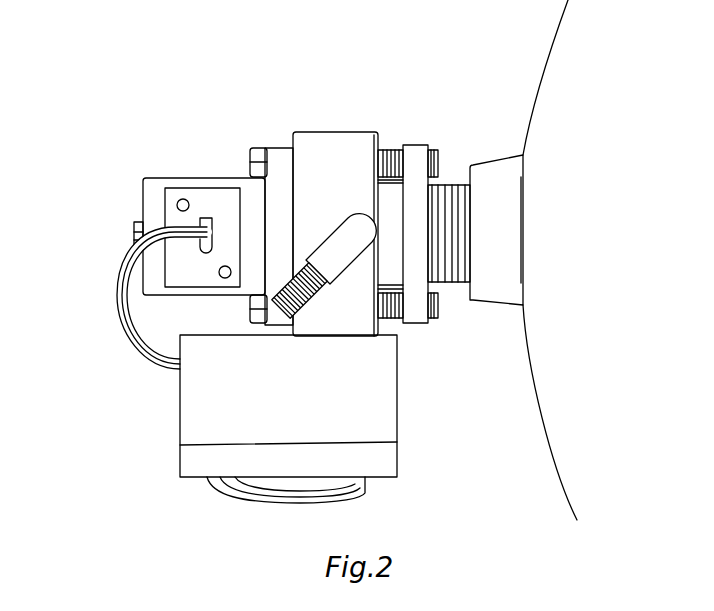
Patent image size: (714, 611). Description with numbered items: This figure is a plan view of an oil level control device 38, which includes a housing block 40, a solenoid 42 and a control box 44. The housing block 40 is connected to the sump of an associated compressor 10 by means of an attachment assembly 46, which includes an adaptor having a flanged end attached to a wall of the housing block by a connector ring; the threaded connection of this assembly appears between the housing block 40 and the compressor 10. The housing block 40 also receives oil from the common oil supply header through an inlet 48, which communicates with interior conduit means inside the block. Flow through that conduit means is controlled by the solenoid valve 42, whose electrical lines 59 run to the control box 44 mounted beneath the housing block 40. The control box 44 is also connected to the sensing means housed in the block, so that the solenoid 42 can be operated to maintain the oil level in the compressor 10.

The compressor 10 is at (535, 419).
The oil level control device 38 is at (126, 370).
The housing block 40 is at (365, 98).
The solenoid 42 is at (133, 197).
The control box 44 is at (180, 423).
The attachment assembly 46 is at (455, 163).
The inlet 48 is at (328, 234).
The electrical lines 59 is at (119, 321).